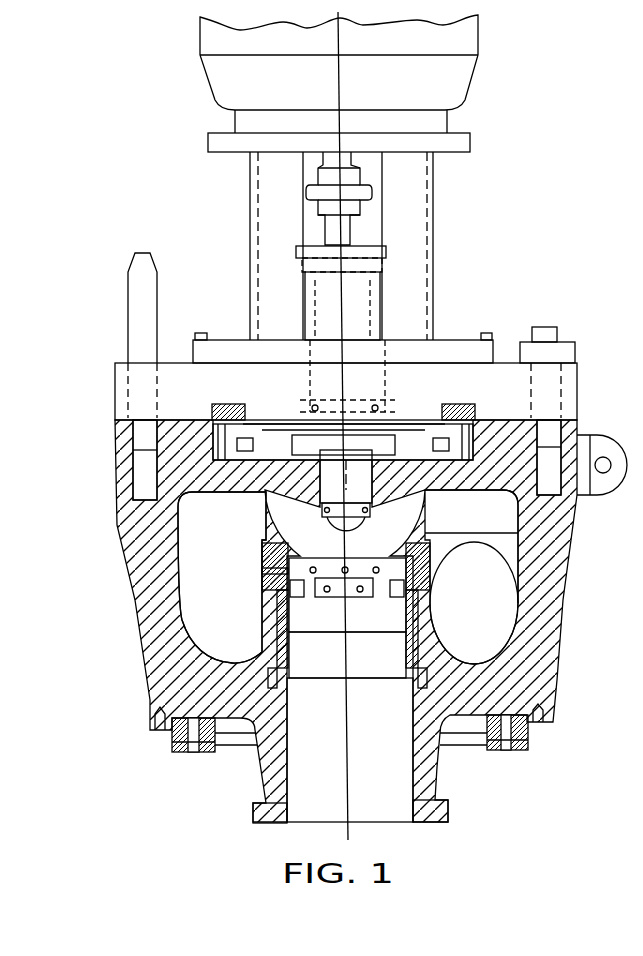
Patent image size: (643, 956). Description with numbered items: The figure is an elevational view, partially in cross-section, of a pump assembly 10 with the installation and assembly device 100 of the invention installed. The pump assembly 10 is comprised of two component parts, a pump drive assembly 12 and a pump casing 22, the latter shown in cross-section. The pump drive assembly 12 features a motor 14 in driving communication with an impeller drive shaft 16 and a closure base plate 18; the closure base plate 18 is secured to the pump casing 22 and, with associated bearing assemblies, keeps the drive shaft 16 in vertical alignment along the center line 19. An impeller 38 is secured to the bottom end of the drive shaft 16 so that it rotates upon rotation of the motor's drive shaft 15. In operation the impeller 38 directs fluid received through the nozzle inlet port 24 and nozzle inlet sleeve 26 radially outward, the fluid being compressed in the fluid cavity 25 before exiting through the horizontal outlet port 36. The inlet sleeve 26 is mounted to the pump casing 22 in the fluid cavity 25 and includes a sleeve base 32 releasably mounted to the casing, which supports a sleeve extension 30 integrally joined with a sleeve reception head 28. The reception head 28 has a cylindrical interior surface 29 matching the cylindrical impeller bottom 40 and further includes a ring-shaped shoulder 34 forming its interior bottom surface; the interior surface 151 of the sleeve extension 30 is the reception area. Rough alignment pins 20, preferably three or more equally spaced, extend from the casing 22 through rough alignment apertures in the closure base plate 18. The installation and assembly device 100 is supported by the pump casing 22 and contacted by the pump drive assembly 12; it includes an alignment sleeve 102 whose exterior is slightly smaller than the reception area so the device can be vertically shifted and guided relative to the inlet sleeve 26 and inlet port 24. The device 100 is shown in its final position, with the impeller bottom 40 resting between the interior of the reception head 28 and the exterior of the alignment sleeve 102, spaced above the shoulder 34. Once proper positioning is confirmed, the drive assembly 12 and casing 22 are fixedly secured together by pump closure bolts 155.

The pump assembly 10 is at (498, 171).
The pump drive assembly 12 is at (433, 299).
The motor 14 is at (470, 46).
The motor's drive shaft 15 is at (350, 165).
The impeller drive shaft 16 is at (350, 240).
The closure base plate 18 is at (508, 368).
The center line 19 is at (342, 38).
The rough alignment pins 20 is at (128, 302).
The pump casing 22 is at (123, 556).
The nozzle inlet port 24 is at (405, 822).
The fluid cavity 25 is at (250, 621).
The nozzle inlet sleeve 26 is at (418, 642).
The sleeve reception head 28 is at (520, 533).
The cylindrical interior surface 29 is at (264, 538).
The sleeve extension 30 is at (276, 624).
The sleeve base 32 is at (220, 753).
The ring-shaped shoulder 34 is at (432, 578).
The horizontal outlet port 36 is at (503, 633).
The impeller 38 is at (418, 532).
The impeller bottom 40 is at (262, 568).
The installation and assembly device 100 is at (377, 610).
The alignment sleeve 102 is at (340, 623).
The interior surface 151 is at (410, 675).
The pump closure bolts 155 is at (582, 348).